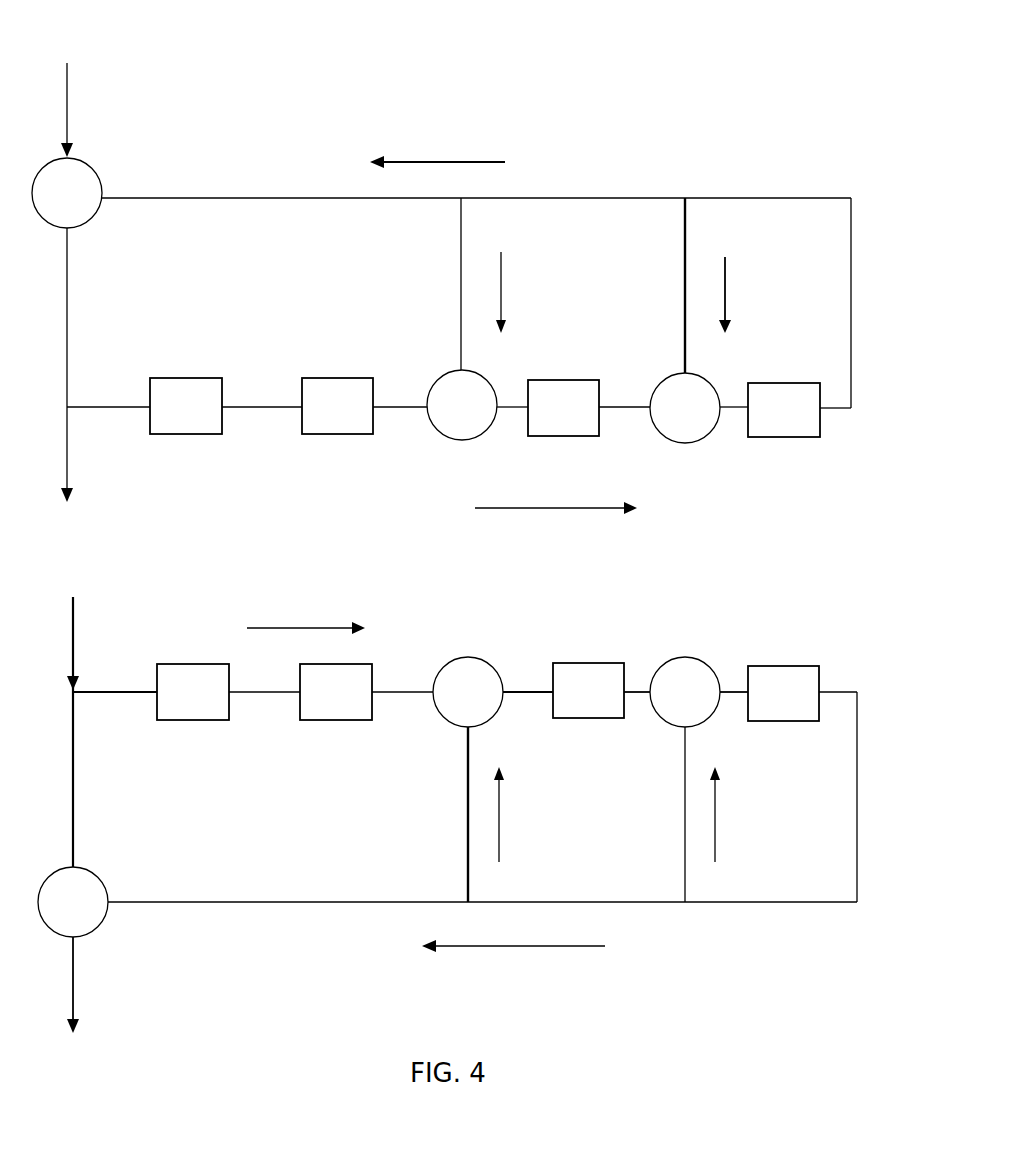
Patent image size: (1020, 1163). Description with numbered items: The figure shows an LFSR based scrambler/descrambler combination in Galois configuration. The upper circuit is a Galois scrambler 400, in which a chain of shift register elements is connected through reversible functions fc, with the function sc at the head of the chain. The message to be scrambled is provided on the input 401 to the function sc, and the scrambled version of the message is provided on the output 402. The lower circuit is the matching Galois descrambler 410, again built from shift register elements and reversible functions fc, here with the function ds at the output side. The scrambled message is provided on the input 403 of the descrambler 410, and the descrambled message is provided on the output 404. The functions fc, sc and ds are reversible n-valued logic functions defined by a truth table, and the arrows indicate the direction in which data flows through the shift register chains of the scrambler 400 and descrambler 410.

The Galois scrambler 400 is at (474, 335).
The scrambler input 401 is at (95, 103).
The scrambler output 402 is at (99, 372).
The descrambler input 403 is at (104, 729).
The descrambler output 404 is at (108, 985).
The Galois descrambler 410 is at (477, 787).